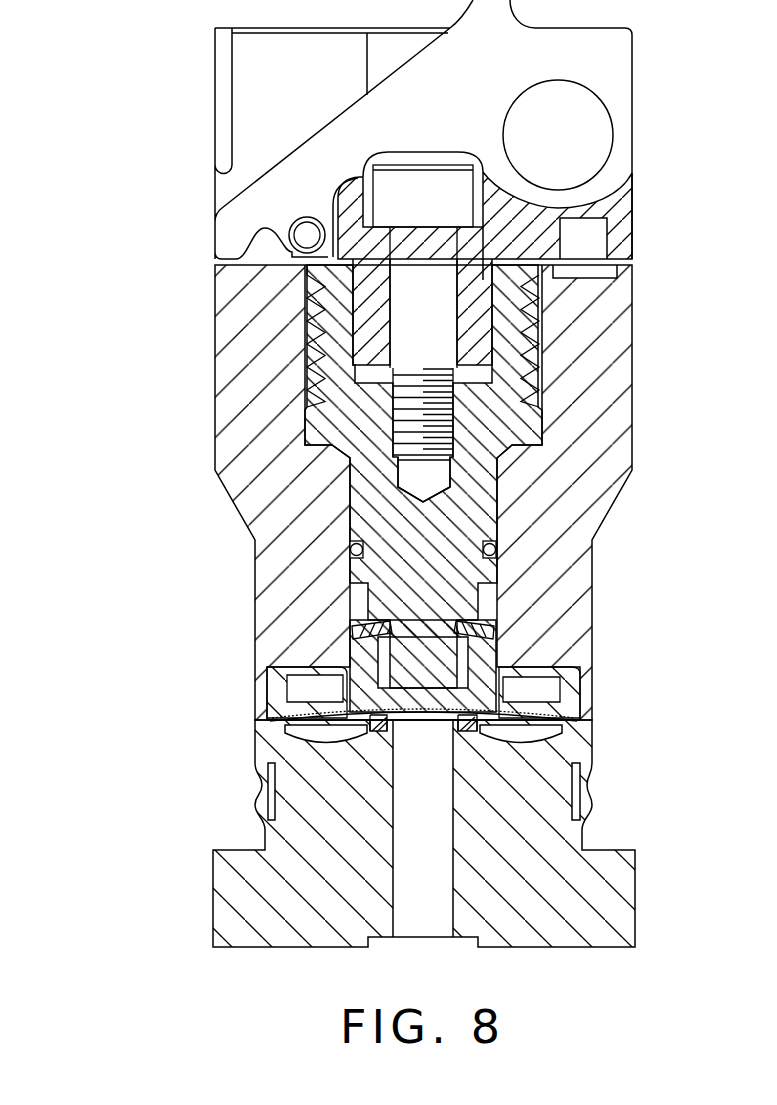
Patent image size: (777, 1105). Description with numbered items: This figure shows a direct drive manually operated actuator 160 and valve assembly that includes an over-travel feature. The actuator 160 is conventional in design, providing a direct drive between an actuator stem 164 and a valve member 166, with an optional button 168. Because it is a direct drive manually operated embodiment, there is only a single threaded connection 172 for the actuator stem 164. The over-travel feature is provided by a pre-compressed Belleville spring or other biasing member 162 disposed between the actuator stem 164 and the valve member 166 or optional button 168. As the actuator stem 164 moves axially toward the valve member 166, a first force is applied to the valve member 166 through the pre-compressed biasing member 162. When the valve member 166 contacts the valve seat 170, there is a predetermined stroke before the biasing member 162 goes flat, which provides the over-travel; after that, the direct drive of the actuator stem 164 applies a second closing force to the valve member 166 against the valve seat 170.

The direct drive manually operated actuator 160 is at (210, 432).
The biasing member 162 is at (478, 627).
The actuator stem 164 is at (517, 362).
The valve member 166 is at (502, 718).
The button 168 is at (363, 662).
The valve seat 170 is at (393, 720).
The threaded connection 172 is at (304, 344).